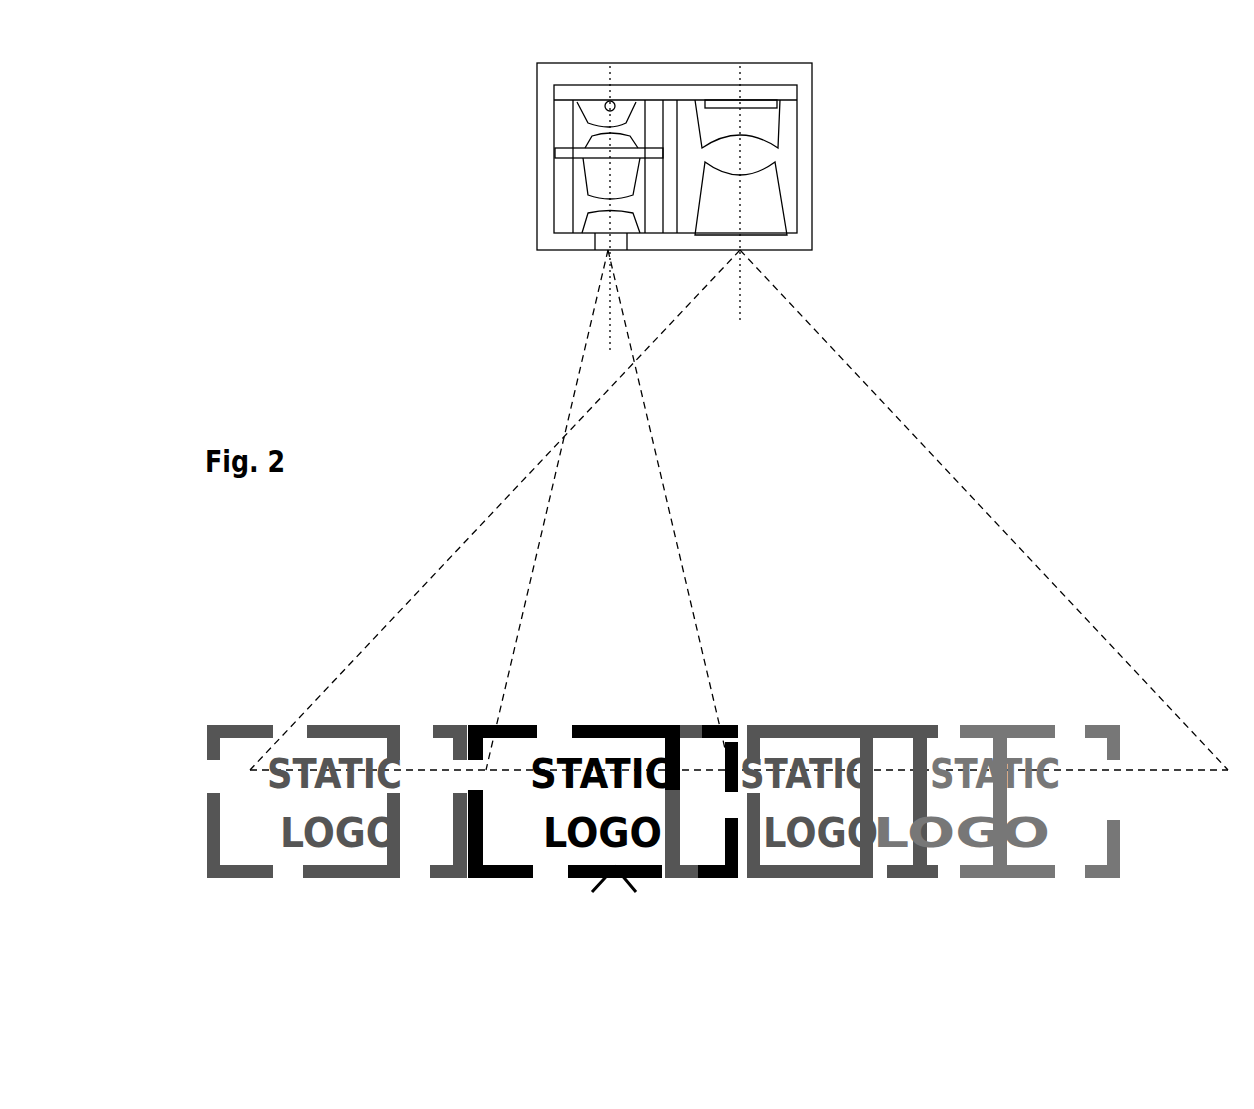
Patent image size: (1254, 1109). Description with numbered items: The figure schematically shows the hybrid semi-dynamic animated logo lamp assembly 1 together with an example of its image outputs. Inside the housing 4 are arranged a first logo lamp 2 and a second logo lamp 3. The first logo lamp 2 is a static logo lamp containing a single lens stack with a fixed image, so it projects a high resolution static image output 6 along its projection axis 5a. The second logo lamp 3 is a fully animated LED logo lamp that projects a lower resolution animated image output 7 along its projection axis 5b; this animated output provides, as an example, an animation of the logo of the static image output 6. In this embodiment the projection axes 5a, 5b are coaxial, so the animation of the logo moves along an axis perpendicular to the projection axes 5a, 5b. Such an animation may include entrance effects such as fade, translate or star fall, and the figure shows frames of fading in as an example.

The hybrid semi-dynamic animated logo lamp assembly 1 is at (524, 172).
The first logo lamp 2 is at (575, 140).
The second logo lamp 3 is at (793, 150).
The housing 4 is at (804, 200).
The projection axis 5a is at (608, 310).
The projection axis 5b is at (745, 281).
The high resolution static image output 6 is at (665, 487).
The low resolution animated image output 7 is at (914, 437).